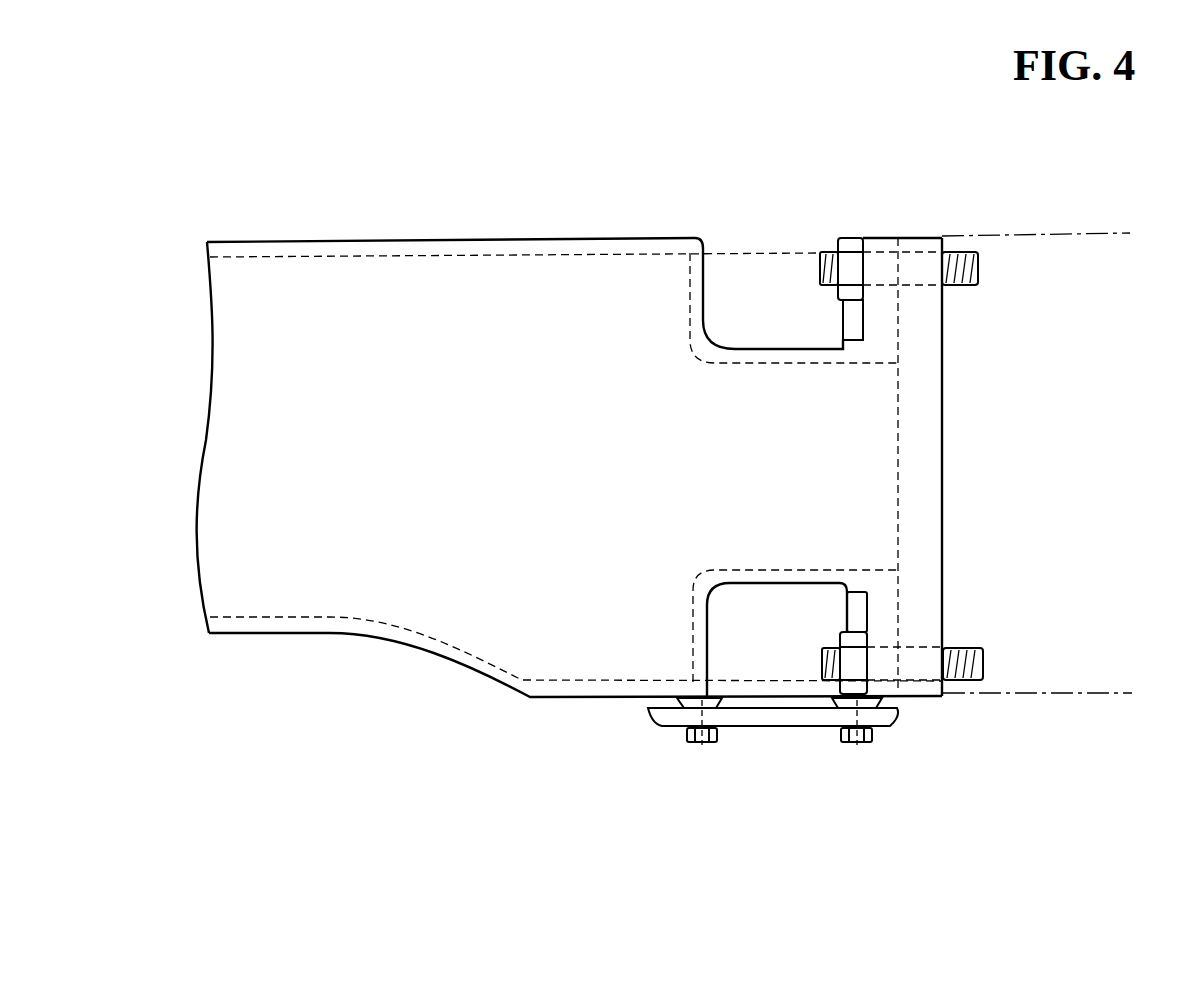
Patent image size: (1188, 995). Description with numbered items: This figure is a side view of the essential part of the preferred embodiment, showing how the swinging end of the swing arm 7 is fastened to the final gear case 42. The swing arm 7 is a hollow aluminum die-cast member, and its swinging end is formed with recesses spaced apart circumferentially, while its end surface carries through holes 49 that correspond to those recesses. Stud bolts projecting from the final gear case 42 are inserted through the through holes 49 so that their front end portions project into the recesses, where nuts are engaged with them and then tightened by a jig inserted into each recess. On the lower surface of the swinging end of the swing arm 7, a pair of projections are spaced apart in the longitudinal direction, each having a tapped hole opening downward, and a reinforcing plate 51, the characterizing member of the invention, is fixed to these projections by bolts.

The swing arm 7 is at (490, 238).
The final gear case 42 is at (1103, 695).
The through hole 49 is at (920, 230).
The reinforcing plate 51 is at (773, 722).